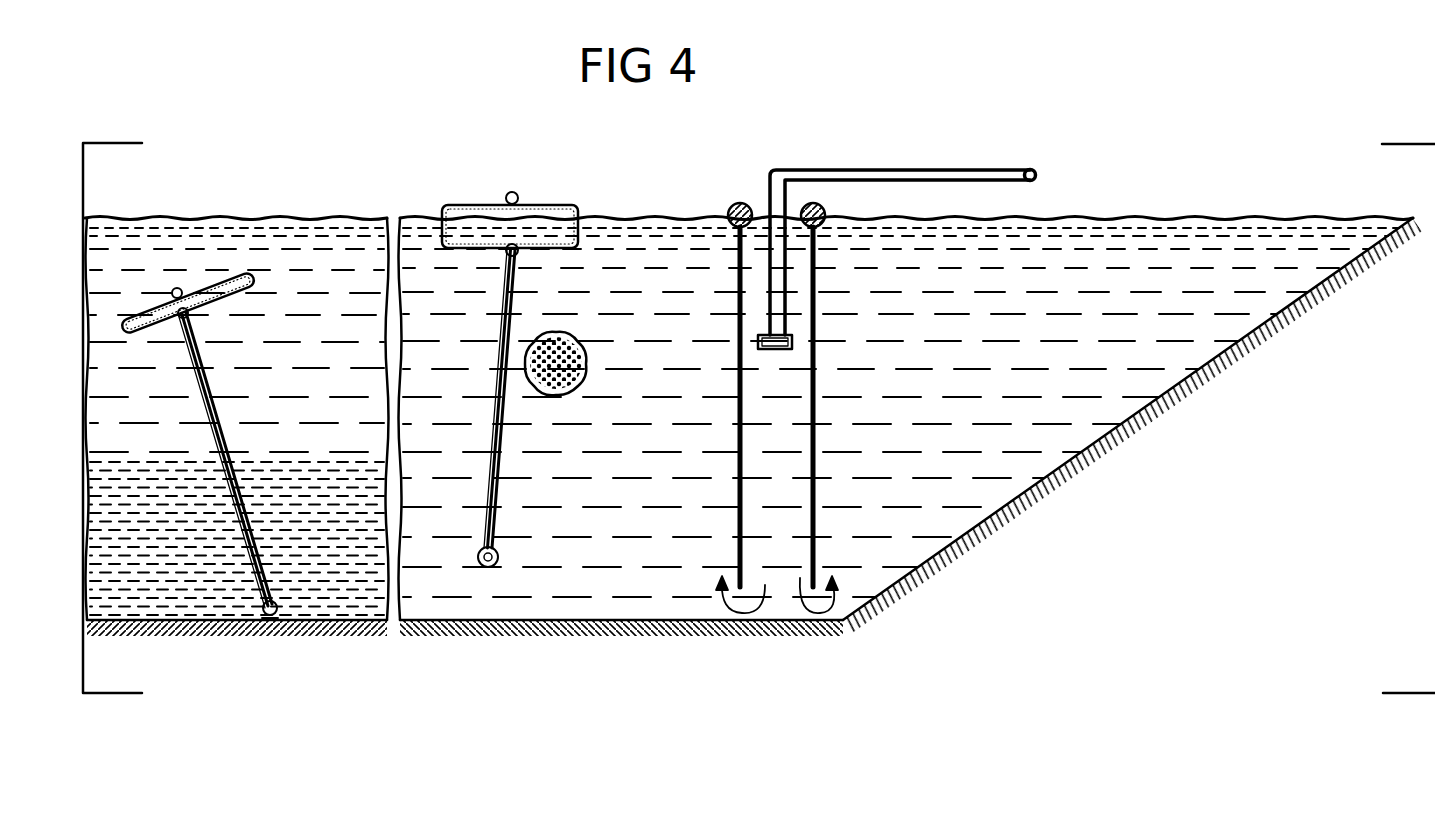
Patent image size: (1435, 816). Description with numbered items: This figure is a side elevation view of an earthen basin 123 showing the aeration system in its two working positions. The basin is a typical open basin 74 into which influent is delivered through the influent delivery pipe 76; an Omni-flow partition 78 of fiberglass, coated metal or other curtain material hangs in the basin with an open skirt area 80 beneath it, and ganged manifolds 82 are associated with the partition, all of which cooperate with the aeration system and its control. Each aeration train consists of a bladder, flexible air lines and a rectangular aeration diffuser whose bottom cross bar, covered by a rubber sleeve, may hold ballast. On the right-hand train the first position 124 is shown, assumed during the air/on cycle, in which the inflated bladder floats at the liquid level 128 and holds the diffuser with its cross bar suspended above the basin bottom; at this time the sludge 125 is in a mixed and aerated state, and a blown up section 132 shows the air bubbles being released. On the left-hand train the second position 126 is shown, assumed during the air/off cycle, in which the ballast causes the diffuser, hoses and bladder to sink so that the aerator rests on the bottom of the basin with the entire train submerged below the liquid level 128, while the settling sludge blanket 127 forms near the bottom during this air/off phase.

The open basin 74 is at (836, 395).
The influent delivery pipe 76 is at (958, 181).
The Omni-flow partition 78 is at (738, 455).
The open skirt area 80 is at (745, 590).
The ganged manifolds 82 is at (780, 350).
The earthen basin 123 is at (1010, 513).
The first position 124 is at (525, 502).
The sludge in mixed and aerated state 125 is at (901, 412).
The second position 126 is at (267, 518).
The settling sludge blanket 127 is at (145, 481).
The liquid level 128 is at (206, 218).
The blown up section showing air bubbles 132 is at (586, 356).